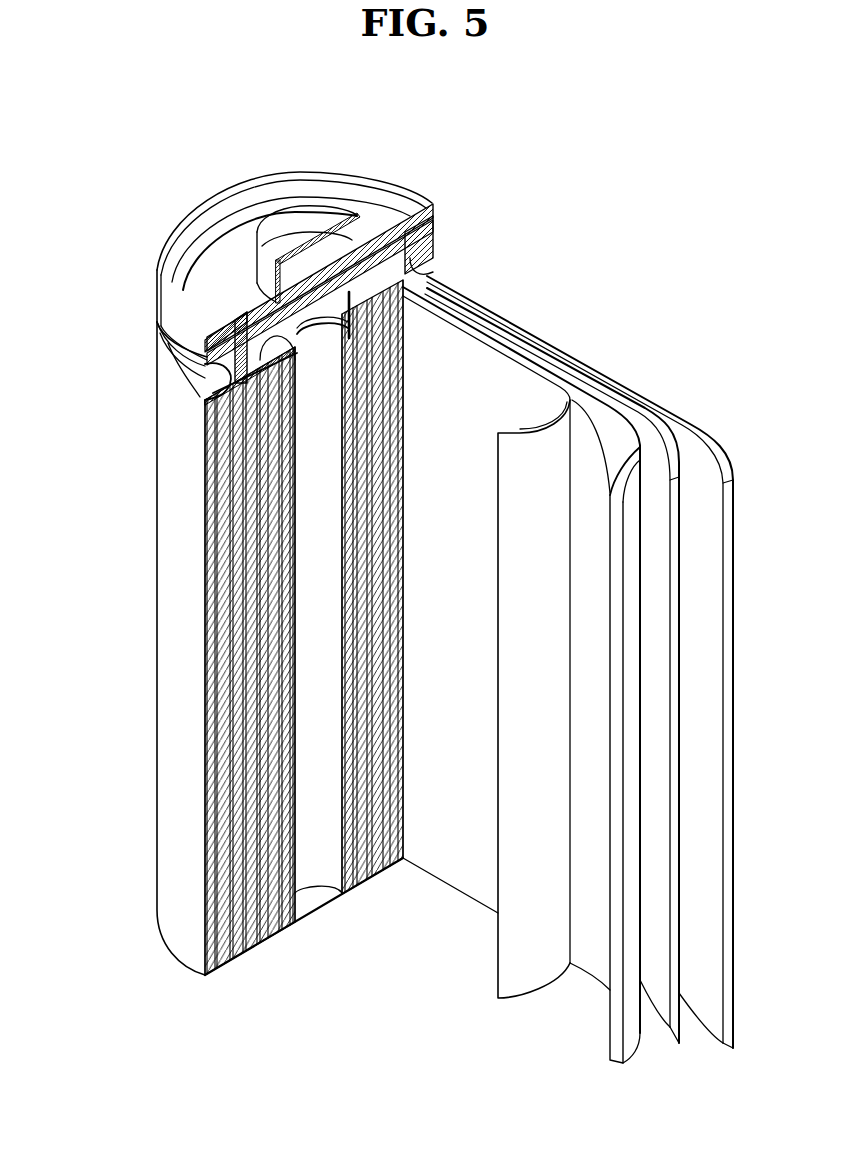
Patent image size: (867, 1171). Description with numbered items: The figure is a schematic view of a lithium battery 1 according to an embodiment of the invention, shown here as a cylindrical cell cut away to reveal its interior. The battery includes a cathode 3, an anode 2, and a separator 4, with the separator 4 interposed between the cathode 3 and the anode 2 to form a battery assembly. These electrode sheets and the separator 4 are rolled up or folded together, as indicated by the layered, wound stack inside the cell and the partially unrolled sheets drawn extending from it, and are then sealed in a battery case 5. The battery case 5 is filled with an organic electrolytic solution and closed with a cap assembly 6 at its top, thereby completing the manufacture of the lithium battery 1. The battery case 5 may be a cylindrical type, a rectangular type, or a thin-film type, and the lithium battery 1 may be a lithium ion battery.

The lithium battery 1 is at (588, 197).
The anode 2 is at (707, 446).
The cathode 3 is at (628, 442).
The separator 4 is at (537, 434).
The battery case 5 is at (163, 622).
The cap assembly 6 is at (290, 220).